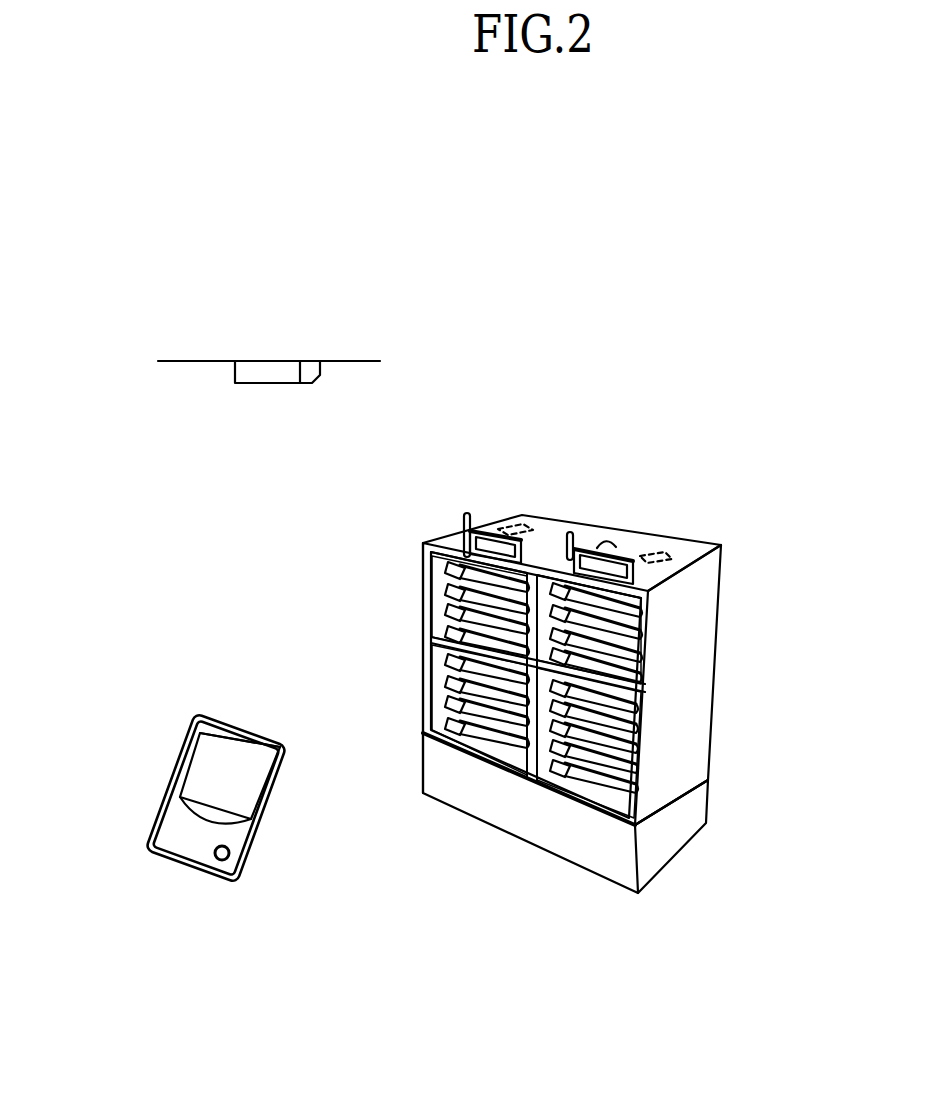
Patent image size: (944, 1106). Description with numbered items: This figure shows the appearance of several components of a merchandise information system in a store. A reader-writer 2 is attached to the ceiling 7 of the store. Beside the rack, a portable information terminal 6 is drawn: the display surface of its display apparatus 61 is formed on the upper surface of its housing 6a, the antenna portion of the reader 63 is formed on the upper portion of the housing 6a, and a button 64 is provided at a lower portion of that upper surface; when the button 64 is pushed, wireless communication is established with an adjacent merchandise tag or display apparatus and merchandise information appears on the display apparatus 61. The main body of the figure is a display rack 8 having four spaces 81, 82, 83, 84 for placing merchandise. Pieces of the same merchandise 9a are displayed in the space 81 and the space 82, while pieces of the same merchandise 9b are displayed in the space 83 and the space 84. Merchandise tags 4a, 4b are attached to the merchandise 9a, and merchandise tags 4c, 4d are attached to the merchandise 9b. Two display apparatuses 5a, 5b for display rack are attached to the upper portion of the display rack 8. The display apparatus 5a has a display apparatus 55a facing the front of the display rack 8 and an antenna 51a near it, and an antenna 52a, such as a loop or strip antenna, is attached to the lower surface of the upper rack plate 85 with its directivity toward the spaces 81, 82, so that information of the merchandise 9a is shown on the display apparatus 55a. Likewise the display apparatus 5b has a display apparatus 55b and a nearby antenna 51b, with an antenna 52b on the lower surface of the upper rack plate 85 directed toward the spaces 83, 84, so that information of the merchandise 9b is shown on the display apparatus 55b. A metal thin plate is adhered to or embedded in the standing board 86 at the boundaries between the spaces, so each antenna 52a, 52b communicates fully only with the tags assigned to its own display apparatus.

The reader-writer 2 is at (247, 372).
The ceiling 7 is at (185, 357).
The merchandise tag 4a is at (450, 612).
The merchandise tag 4b is at (456, 636).
The merchandise tag 4c is at (536, 776).
The merchandise tag 4d is at (558, 775).
The display apparatus for display rack 5a is at (462, 538).
The display apparatus for display rack 5b is at (722, 569).
The portable information terminal 6 is at (168, 797).
The housing 6a is at (162, 849).
The display rack 8 is at (476, 802).
The merchandise 9a is at (455, 596).
The merchandise 9b is at (622, 628).
The antenna 51a is at (466, 525).
The antenna 51b is at (595, 541).
The antenna 52a is at (527, 529).
The antenna 52b is at (660, 560).
The display apparatus 55a is at (466, 528).
The display apparatus 55b is at (647, 592).
The display apparatus 61 is at (208, 757).
The antenna portion of the reader 63 is at (225, 723).
The button 64 is at (218, 862).
The space 81 is at (427, 560).
The space 82 is at (437, 680).
The space 83 is at (650, 679).
The space 84 is at (690, 833).
The upper rack plate 85 is at (553, 530).
The standing board 86 is at (605, 542).